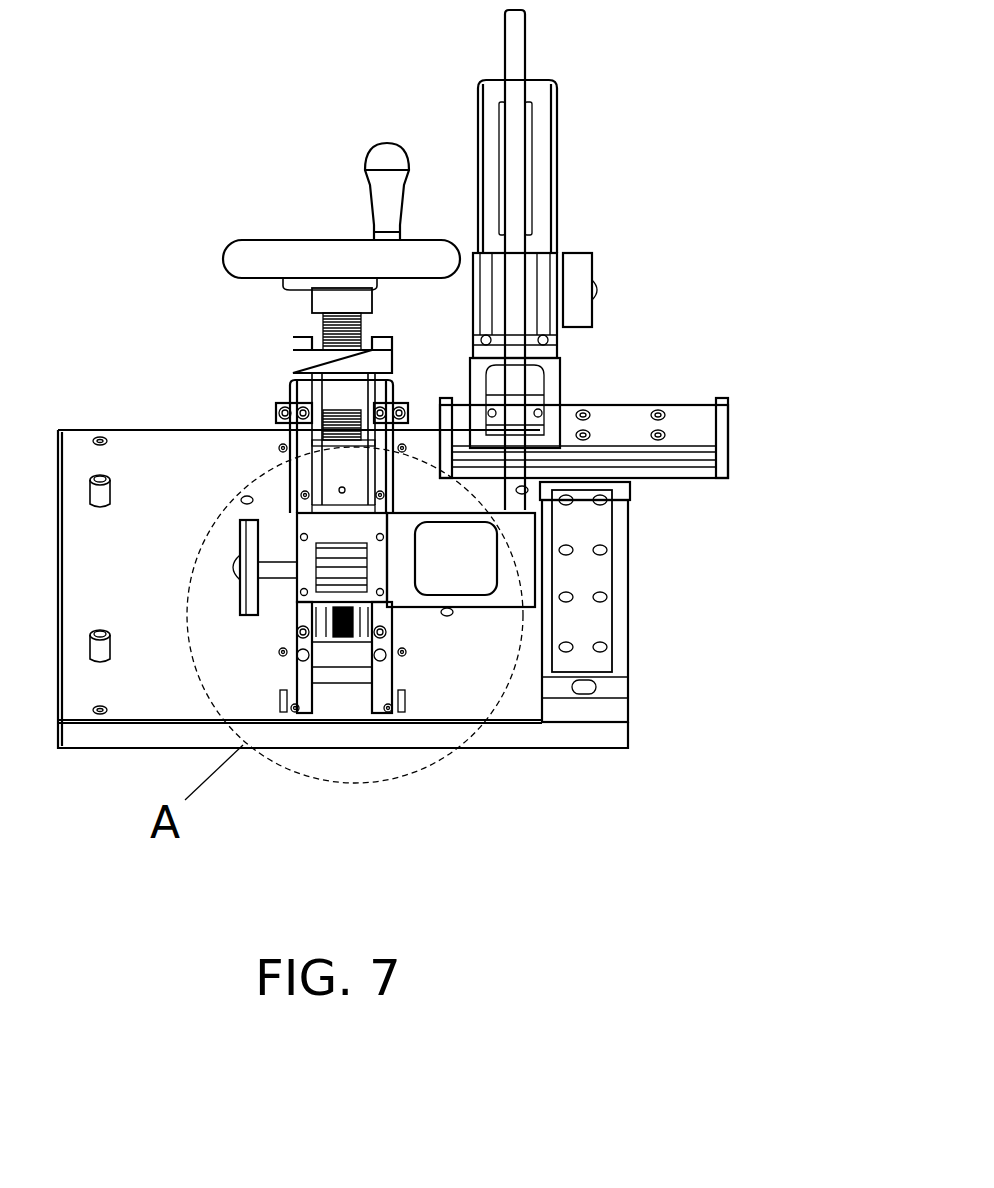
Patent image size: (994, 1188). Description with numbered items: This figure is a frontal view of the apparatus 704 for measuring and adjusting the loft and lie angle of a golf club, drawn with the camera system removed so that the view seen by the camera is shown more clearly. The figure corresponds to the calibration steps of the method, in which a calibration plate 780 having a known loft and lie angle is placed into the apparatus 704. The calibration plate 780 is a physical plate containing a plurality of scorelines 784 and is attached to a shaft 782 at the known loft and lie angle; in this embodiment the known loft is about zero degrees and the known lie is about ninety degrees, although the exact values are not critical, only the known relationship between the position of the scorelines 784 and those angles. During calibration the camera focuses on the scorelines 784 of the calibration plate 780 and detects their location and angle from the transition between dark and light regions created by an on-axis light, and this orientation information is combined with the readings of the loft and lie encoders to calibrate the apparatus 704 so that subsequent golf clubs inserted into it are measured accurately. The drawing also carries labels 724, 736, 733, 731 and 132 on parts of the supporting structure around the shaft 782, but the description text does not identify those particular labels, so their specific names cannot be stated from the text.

The apparatus 704 is at (602, 848).
The handwheel 724 is at (260, 240).
The rod housing 736 is at (557, 118).
The clamp block 733 is at (597, 252).
The shaft 782 is at (557, 350).
The rail 132 is at (705, 405).
The support column 731 is at (628, 610).
The calibration plate 780 is at (630, 752).
The scorelines 784 is at (375, 540).